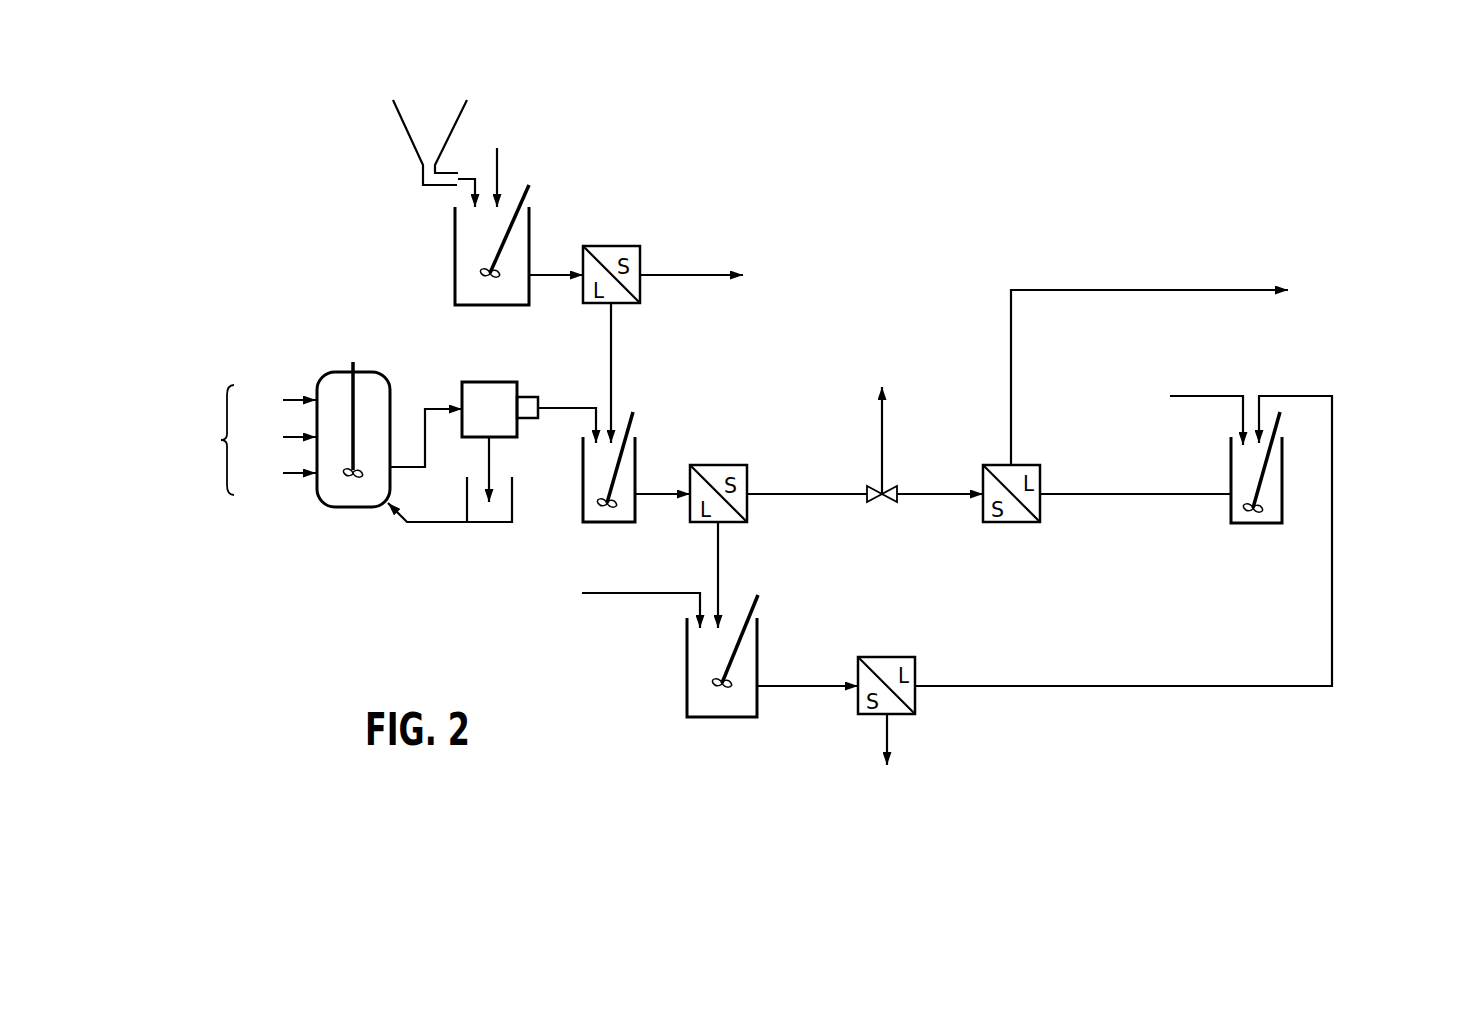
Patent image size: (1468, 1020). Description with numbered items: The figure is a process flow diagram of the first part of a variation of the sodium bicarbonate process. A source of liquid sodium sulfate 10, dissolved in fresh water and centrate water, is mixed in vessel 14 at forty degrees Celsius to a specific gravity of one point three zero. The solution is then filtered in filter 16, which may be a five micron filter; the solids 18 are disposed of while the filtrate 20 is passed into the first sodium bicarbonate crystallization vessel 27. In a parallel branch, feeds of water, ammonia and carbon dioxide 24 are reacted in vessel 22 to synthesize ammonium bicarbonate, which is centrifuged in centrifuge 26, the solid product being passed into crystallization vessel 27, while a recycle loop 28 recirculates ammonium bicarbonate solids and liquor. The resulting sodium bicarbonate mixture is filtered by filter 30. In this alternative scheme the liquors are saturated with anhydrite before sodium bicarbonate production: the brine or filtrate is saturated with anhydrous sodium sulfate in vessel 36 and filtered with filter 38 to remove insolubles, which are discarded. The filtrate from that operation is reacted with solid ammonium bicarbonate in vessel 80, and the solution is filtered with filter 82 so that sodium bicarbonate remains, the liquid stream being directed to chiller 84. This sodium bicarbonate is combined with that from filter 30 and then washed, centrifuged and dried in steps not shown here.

The source of liquid sodium sulfate 10 is at (393, 125).
The vessel 14 is at (529, 222).
The filter 16 is at (617, 246).
The solids 18 is at (738, 270).
The filtrate 20 is at (613, 340).
The vessel 22 is at (330, 372).
The feeds of water, ammonia and carbon dioxide 24 is at (213, 440).
The centrifuge 26 is at (476, 382).
The first sodium bicarbonate crystallization vessel 27 is at (637, 448).
The recycle loop 28 is at (543, 487).
The filter 30 is at (717, 465).
The vessel 36 is at (683, 707).
The filter 38 is at (915, 703).
The vessel 80 is at (1250, 523).
The filter 82 is at (1022, 522).
The chiller 84 is at (1228, 370).